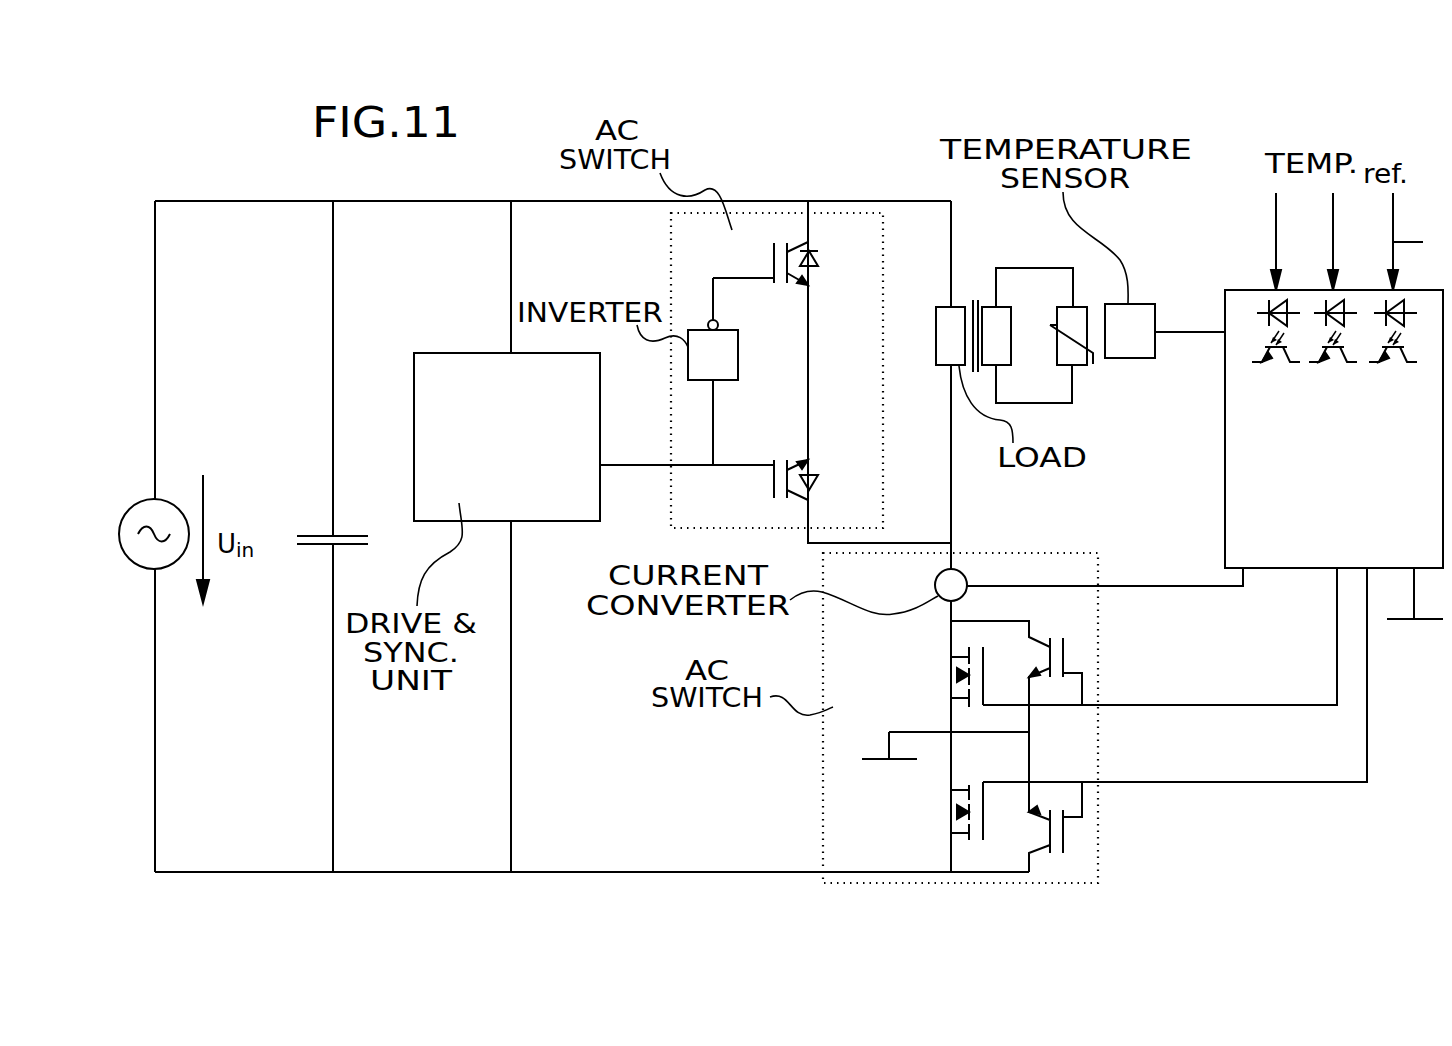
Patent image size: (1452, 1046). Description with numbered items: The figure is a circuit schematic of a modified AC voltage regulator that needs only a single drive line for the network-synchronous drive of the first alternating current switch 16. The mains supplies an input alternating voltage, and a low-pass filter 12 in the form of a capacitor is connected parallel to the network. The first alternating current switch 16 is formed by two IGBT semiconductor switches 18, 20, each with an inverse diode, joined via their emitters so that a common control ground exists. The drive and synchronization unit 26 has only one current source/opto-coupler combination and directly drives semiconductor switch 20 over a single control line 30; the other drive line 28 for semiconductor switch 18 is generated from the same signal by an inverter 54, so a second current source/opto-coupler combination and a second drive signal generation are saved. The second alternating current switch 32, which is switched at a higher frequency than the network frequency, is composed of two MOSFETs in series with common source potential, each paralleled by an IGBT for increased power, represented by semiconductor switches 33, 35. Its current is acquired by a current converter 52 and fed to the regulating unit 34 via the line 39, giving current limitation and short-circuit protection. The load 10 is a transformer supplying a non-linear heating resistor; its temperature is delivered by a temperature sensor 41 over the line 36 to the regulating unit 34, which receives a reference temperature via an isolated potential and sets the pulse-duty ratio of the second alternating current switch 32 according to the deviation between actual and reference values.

The load 10 is at (955, 336).
The low-pass filter 12 is at (355, 542).
The first alternating current switch 16 is at (682, 241).
The semiconductor switch 18 is at (793, 280).
The semiconductor switch 20 is at (792, 463).
The drive and synchronization unit 26 is at (507, 437).
The drive line 28 is at (727, 303).
The control line 30 is at (687, 448).
The second alternating current switch 32 is at (838, 823).
The semiconductor switch 33 is at (1016, 676).
The regulating unit 34 is at (1334, 429).
The semiconductor switch 35 is at (1016, 802).
The line 36 is at (1190, 315).
The line 39 is at (1105, 569).
The temperature sensor 41 is at (1130, 331).
The current converter 52 is at (931, 586).
The inverter 54 is at (713, 397).